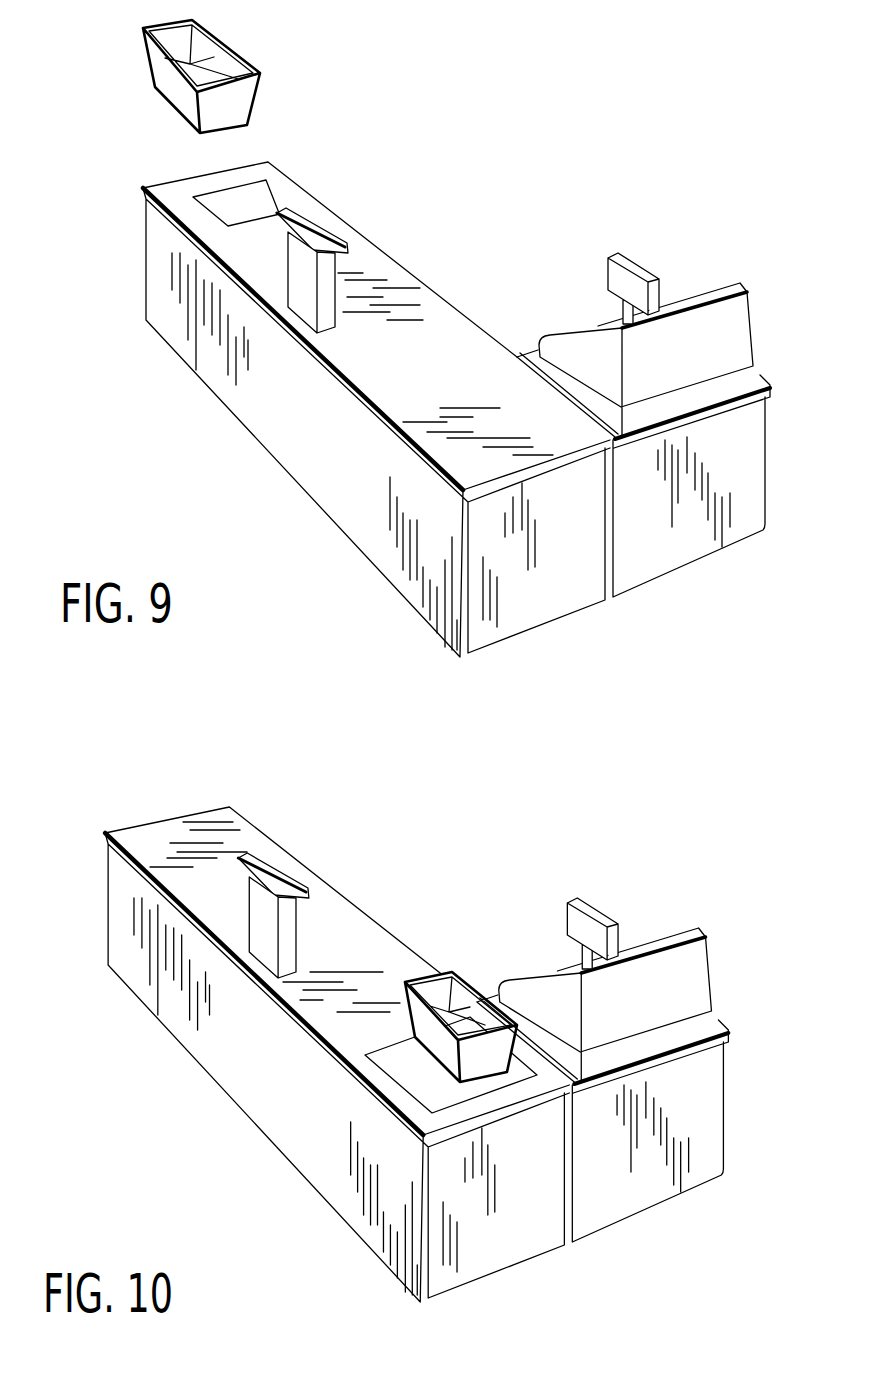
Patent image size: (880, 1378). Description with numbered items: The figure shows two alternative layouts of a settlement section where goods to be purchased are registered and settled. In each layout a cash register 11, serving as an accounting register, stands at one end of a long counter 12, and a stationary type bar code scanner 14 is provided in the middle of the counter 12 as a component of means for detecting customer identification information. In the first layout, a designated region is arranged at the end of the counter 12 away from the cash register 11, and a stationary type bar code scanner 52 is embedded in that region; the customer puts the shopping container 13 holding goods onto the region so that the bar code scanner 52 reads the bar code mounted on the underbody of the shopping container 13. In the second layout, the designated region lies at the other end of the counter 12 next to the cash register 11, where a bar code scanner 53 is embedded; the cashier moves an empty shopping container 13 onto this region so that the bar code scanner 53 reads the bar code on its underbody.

In FIG. 9, the cash register 11 is at (738, 287).
In FIG. 10, the cash register 11 is at (698, 928).
In FIG. 9, the counter 12 is at (435, 313).
In FIG. 10, the counter 12 is at (363, 923).
In FIG. 9, the shopping container 13 is at (237, 46).
In FIG. 10, the shopping container 13 is at (470, 997).
In FIG. 9, the bar code scanner 14 is at (323, 233).
In FIG. 10, the bar code scanner 14 is at (284, 880).
In FIG. 9, the bar code scanner 52 is at (273, 192).
In FIG. 10, the bar code scanner 53 is at (402, 1067).